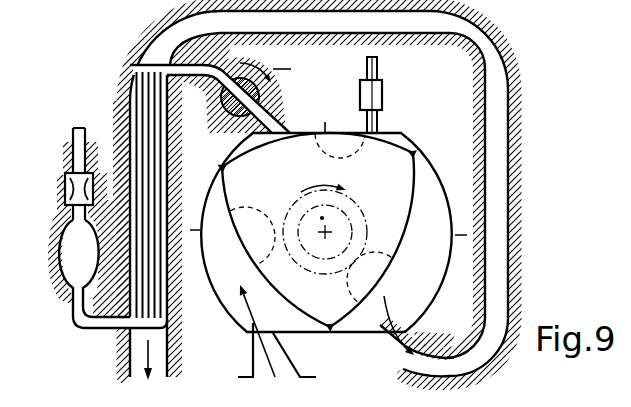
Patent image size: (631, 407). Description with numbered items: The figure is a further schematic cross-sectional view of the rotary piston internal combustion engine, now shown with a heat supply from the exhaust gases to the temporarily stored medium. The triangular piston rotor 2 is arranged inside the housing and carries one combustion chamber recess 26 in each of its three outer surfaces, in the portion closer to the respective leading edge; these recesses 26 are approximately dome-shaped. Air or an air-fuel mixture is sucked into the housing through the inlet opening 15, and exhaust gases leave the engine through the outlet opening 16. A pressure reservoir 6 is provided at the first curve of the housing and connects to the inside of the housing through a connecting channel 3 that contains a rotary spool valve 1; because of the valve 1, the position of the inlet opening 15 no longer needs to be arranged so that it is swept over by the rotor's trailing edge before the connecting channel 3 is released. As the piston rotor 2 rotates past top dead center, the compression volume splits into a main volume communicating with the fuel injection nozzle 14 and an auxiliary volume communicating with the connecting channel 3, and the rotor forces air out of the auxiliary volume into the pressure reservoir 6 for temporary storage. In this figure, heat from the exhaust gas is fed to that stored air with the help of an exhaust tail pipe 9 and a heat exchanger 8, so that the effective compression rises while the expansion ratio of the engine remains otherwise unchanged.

The rotary spool valve 1 is at (270, 91).
The piston rotor 2 is at (333, 302).
The connecting channel 3 is at (280, 119).
The pressure reservoir 6 is at (70, 256).
The heat exchanger 8 is at (143, 100).
The exhaust tail pipe 9 is at (160, 37).
The fuel injection nozzle 14 is at (383, 95).
The inlet opening 15 is at (277, 349).
The outlet opening 16 is at (390, 342).
The combustion chamber recess 26 is at (385, 270).